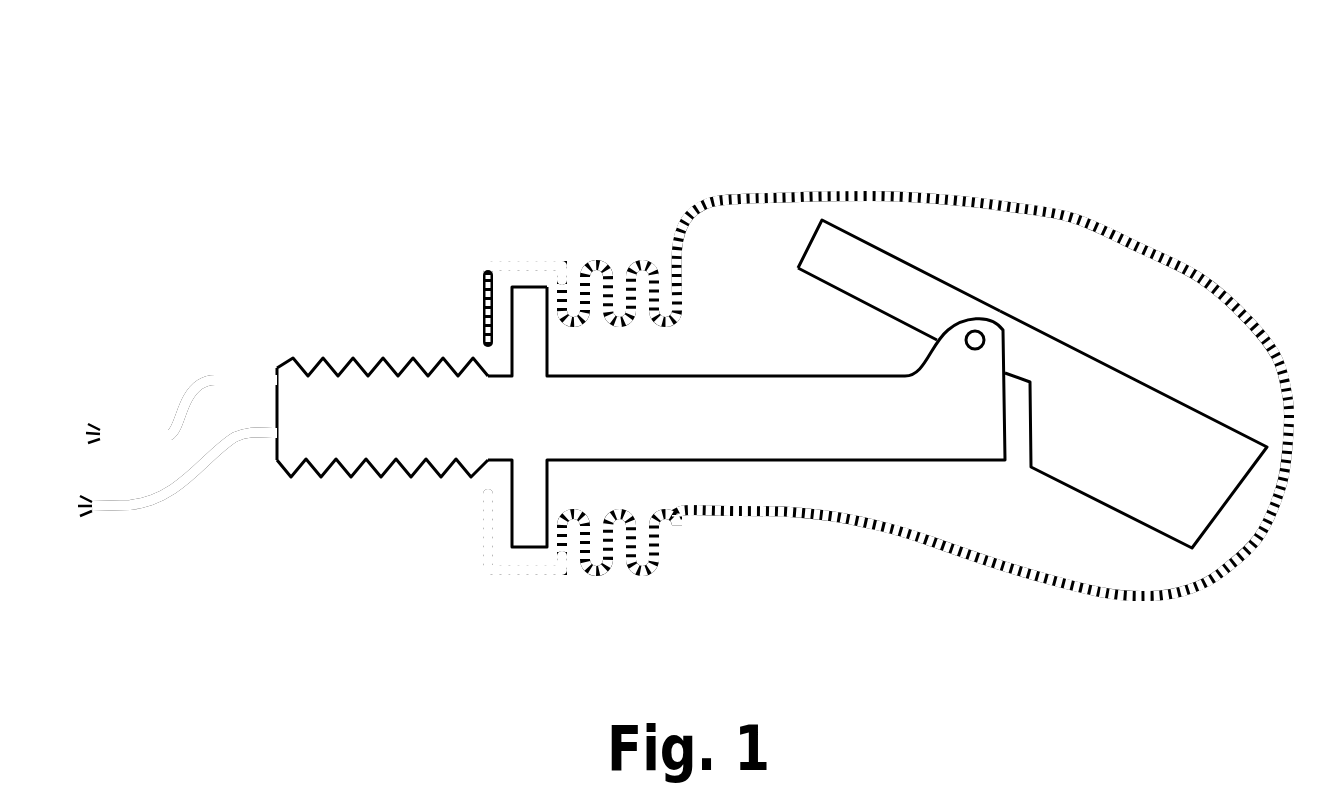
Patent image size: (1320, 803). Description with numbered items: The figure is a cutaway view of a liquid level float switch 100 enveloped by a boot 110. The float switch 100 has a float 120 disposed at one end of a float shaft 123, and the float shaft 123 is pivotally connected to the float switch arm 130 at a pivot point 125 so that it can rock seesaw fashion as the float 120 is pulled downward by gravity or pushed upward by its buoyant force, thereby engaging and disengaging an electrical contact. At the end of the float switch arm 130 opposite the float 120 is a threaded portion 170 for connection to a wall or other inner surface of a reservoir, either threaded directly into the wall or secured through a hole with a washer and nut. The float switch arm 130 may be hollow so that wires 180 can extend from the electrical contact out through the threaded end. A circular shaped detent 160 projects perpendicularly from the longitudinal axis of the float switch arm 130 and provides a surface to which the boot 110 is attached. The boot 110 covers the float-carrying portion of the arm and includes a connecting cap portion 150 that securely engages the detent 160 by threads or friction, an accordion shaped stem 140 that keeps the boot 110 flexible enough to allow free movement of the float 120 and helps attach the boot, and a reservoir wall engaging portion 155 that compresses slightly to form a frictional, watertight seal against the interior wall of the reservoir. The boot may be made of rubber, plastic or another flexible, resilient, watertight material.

The liquid level float switch 100 is at (922, 73).
The boot 110 is at (980, 197).
The float 120 is at (1185, 517).
The float shaft 123 is at (840, 250).
The pivot point 125 is at (983, 332).
The float switch arm 130 is at (798, 433).
The accordion shaped stem 140 is at (620, 278).
The connecting cap portion 150 is at (527, 258).
The reservoir wall engaging portion 155 is at (487, 293).
The detent 160 is at (527, 481).
The threaded portion 170 is at (322, 360).
The wires 180 is at (133, 430).